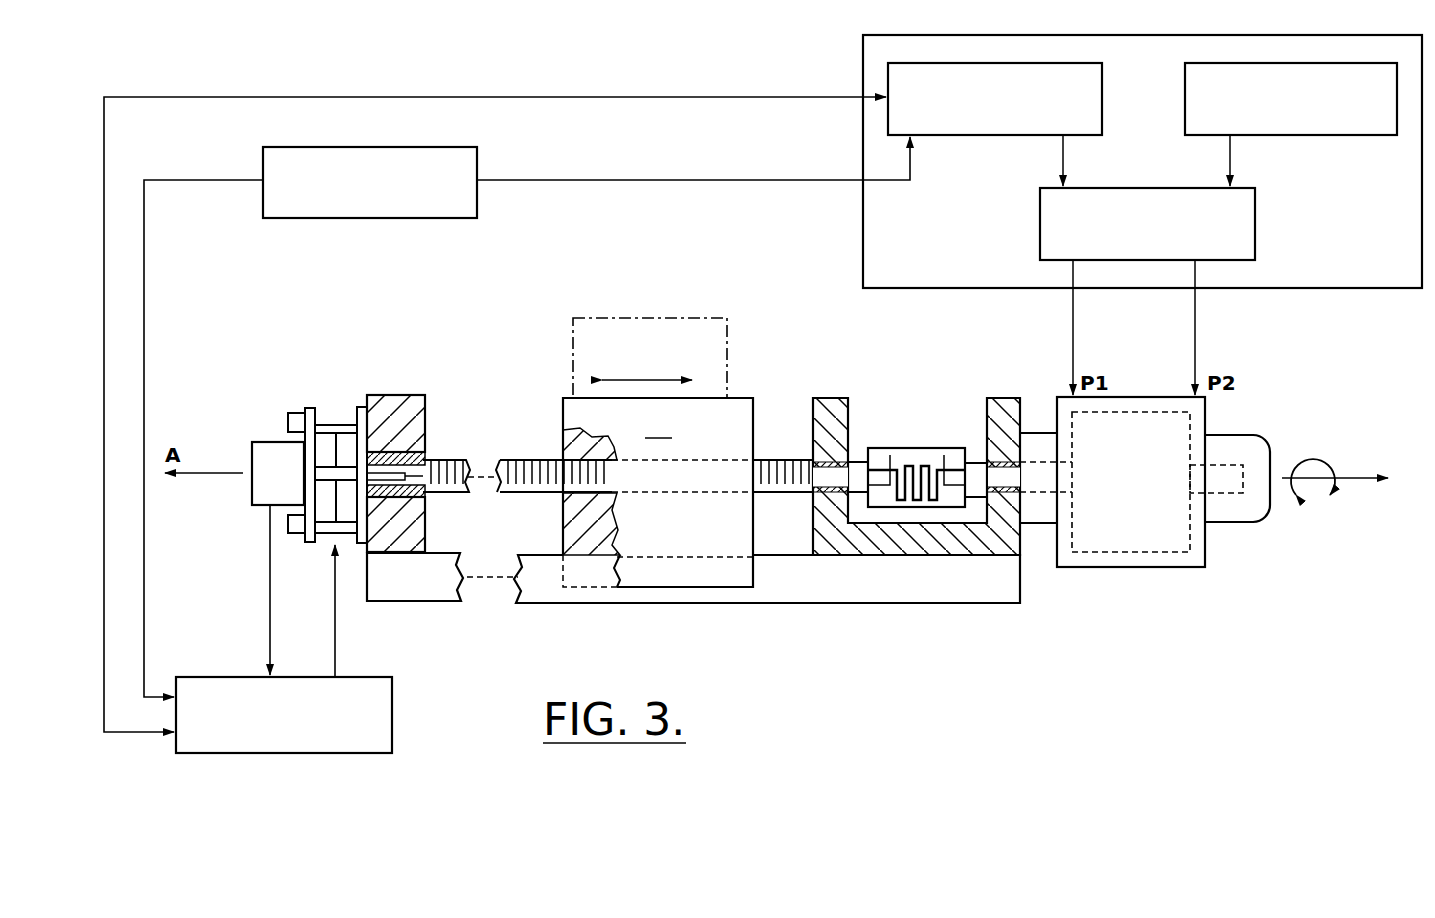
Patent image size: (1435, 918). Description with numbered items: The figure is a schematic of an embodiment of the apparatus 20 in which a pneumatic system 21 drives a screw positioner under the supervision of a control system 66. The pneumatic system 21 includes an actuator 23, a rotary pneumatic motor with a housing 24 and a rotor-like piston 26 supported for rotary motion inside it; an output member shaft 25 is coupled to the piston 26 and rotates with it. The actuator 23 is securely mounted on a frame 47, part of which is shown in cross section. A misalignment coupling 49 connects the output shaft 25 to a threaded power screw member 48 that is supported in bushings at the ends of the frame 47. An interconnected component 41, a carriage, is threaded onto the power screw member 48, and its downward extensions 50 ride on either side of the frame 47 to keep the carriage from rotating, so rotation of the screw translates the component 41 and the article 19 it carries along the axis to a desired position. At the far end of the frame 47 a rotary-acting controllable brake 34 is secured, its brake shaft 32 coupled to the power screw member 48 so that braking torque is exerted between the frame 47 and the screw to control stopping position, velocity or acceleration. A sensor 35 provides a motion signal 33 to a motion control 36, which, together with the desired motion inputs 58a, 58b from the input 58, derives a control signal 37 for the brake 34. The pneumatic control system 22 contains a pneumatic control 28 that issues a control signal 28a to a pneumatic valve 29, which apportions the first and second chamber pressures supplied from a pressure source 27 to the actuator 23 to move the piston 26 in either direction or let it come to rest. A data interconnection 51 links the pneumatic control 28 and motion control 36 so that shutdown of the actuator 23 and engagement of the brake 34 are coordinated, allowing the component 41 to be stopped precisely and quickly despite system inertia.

The article 19 is at (632, 318).
The apparatus 20 is at (735, 315).
The pneumatic system 21 is at (1223, 487).
The pneumatic control system 22 is at (1328, 292).
The actuator 23 is at (1067, 610).
The housing 24 is at (1124, 570).
The output member shaft 25 is at (980, 470).
The piston 26 is at (1173, 553).
The pressure source 27 is at (1341, 138).
The pneumatic control 28 is at (995, 137).
The control signal 28a is at (1065, 150).
The pneumatic valve 29 is at (1040, 223).
The brake shaft 32 is at (425, 430).
The motion signal 33 is at (267, 580).
The controllable brake 34 is at (328, 406).
The sensor 35 is at (266, 441).
The motion control 36 is at (392, 717).
The control signal 37 is at (335, 625).
The interconnected component 41 is at (658, 492).
The frame 47 is at (836, 606).
The threaded power screw member 48 is at (532, 446).
The misalignment coupling 49 is at (894, 447).
The downward extensions 50 is at (578, 589).
The data interconnection 51 is at (783, 100).
The input 58 is at (423, 218).
The desired motion input 58a is at (144, 303).
The desired motion input 58b is at (560, 180).
The control system 66 is at (615, 84).